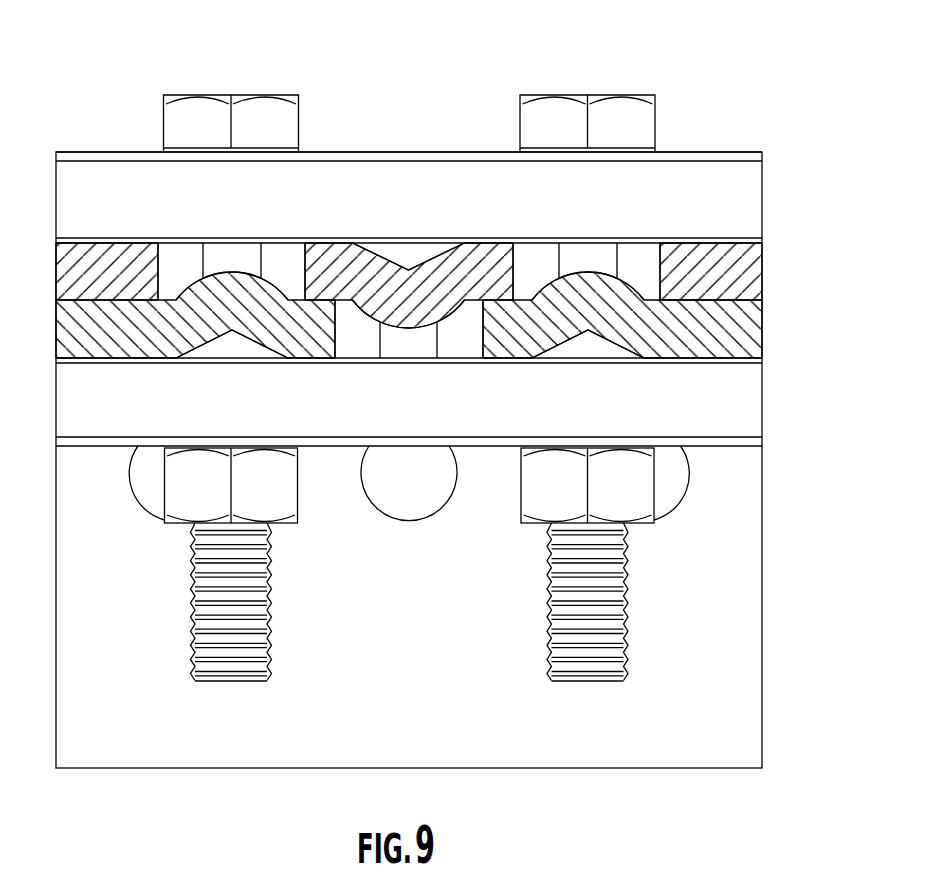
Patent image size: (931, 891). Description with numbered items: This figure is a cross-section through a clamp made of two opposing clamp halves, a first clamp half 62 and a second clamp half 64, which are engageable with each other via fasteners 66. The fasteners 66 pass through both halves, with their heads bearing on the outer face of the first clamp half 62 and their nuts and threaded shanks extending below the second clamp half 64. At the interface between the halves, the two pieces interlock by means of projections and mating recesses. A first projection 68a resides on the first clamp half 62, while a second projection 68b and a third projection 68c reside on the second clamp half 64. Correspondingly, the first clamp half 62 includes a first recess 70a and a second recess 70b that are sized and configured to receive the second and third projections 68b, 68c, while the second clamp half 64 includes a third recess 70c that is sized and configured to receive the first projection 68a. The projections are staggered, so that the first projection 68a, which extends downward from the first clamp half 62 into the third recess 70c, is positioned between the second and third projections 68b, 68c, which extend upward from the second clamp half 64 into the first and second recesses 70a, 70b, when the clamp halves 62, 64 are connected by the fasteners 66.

The first clamp half 62 is at (743, 197).
The second clamp half 64 is at (737, 415).
The fasteners 66 is at (277, 127).
The first projection 68a is at (404, 312).
The second projection 68b is at (258, 297).
The third projection 68c is at (603, 313).
The first recess 70a is at (593, 253).
The second recess 70b is at (178, 257).
The third recess 70c is at (462, 342).